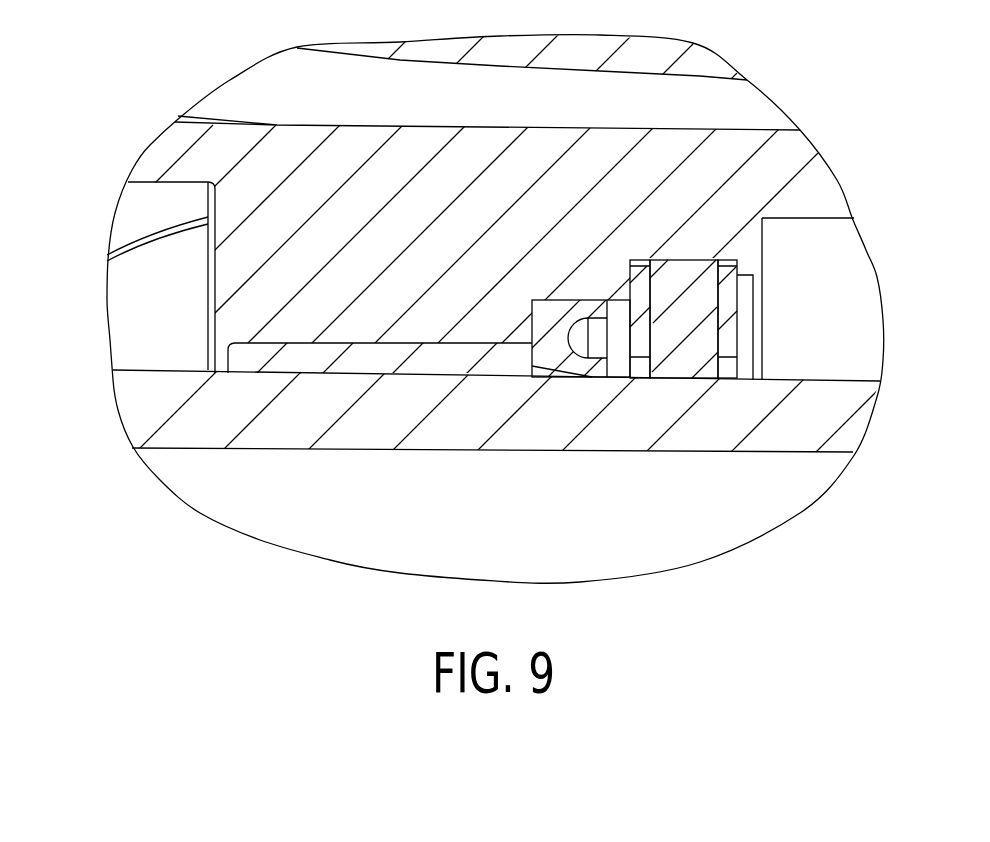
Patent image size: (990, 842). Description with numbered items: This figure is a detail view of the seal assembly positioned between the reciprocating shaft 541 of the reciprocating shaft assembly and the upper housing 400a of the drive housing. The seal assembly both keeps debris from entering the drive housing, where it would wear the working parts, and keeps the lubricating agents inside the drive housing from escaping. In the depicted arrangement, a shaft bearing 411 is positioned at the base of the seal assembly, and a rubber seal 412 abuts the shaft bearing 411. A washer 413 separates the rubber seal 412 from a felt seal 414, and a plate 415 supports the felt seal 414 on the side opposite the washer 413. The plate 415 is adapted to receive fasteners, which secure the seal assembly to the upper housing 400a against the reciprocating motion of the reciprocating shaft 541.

The upper housing 400a is at (843, 183).
The shaft bearing 411 is at (285, 343).
The rubber seal 412 is at (585, 300).
The washer 413 is at (643, 258).
The felt seal 414 is at (698, 258).
The plate 415 is at (730, 258).
The reciprocating shaft 541 is at (313, 450).